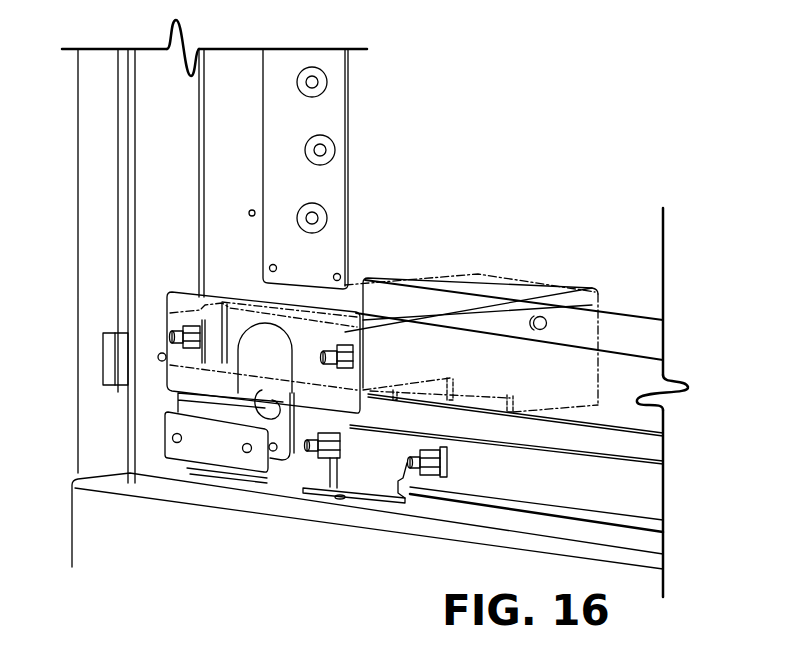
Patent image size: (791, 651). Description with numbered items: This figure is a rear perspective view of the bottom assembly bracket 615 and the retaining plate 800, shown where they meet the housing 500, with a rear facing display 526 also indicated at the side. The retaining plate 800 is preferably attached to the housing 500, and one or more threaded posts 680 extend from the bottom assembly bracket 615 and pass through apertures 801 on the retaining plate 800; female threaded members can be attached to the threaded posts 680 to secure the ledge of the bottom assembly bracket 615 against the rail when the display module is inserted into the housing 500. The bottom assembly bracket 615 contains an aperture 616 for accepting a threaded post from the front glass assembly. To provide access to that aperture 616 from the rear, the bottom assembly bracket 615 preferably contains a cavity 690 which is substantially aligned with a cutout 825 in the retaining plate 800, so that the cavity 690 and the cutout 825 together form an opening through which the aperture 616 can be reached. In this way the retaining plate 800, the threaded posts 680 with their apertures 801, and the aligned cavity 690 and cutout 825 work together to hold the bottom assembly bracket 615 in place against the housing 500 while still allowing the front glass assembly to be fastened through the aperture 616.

The housing 500 is at (152, 168).
The rear facing display 526 is at (550, 238).
The bottom assembly bracket 615 is at (462, 362).
The aperture 616 is at (552, 323).
The retaining plate 800 is at (176, 294).
The apertures 801 is at (188, 325).
The threaded posts 680 is at (171, 334).
The cavity 690 is at (265, 348).
The cutout 825 is at (286, 405).